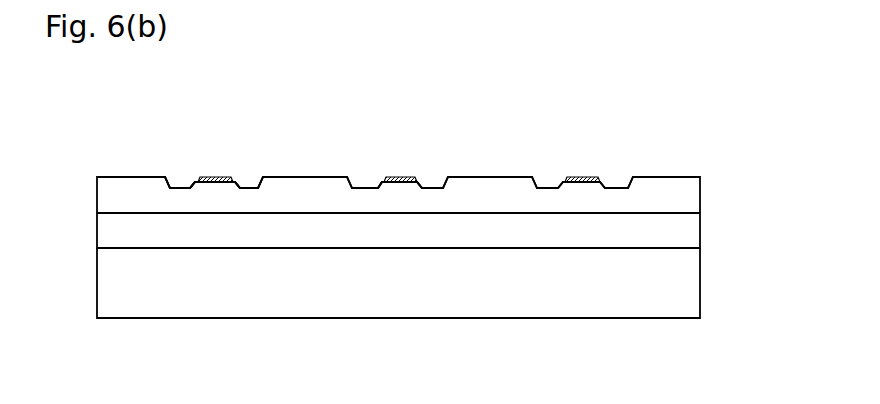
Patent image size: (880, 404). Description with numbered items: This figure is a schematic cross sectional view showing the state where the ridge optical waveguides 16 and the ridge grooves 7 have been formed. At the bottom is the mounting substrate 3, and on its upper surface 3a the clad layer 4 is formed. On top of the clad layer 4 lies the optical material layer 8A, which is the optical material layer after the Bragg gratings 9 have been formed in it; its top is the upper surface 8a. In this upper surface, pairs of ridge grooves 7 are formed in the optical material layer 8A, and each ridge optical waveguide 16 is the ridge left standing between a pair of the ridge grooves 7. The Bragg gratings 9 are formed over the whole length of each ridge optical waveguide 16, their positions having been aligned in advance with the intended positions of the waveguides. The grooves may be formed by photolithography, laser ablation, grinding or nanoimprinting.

The mounting substrate 3 is at (683, 287).
The upper surface of the mounting substrate 3a is at (485, 249).
The clad layer 4 is at (677, 232).
The ridge grooves 7 is at (183, 187).
The optical material layer having Bragg gratings 8A is at (677, 198).
The upper surface of the optical material layer 8a is at (698, 177).
The Bragg gratings 9 is at (215, 179).
The ridge optical waveguide 16 is at (222, 187).